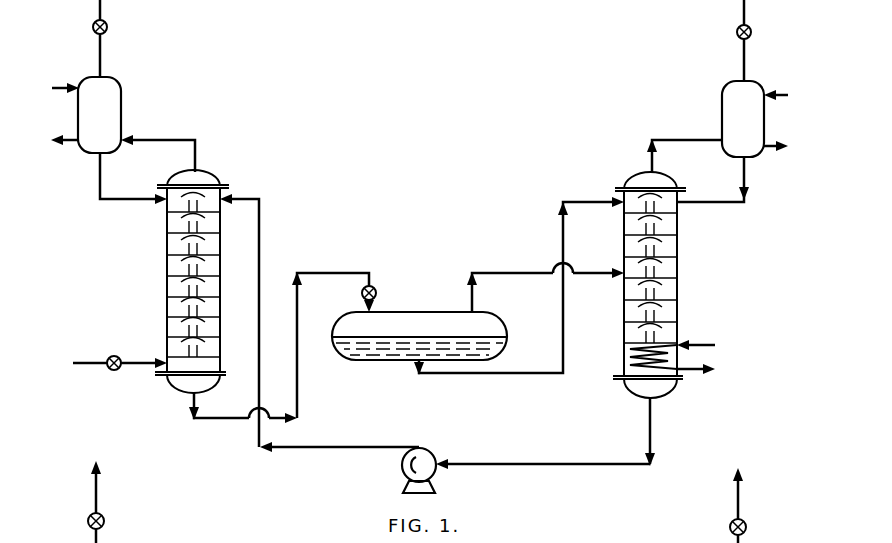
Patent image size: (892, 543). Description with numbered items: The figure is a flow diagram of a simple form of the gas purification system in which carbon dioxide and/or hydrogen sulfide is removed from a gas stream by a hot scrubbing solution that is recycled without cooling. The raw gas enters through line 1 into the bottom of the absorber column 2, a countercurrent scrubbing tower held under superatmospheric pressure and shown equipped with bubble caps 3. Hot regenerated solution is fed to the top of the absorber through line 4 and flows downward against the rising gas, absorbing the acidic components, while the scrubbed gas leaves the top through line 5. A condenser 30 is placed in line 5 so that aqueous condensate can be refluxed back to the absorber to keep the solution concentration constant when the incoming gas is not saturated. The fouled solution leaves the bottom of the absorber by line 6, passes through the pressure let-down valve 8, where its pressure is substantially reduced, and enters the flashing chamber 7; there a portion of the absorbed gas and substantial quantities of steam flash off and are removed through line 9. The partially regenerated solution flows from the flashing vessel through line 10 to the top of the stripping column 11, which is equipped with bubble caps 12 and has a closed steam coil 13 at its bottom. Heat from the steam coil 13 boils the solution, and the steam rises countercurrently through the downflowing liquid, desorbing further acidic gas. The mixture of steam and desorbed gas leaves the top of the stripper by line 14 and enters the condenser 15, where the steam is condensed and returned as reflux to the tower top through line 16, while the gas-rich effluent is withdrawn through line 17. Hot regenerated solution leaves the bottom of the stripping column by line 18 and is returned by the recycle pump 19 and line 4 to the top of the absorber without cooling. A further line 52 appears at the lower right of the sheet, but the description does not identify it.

The line 1 is at (140, 362).
The absorber column 2 is at (167, 296).
The bubble caps 3 is at (200, 241).
The line 4 is at (262, 225).
The line 5 is at (157, 135).
The line 6 is at (225, 420).
The flashing chamber 7 is at (360, 361).
The pressure let-down valve 8 is at (376, 289).
The line 9 is at (517, 272).
The line 10 is at (513, 377).
The stripping column 11 is at (678, 284).
The bubble caps 12 is at (660, 241).
The closed steam coil 13 is at (630, 360).
The line 14 is at (670, 138).
The condenser 15 is at (722, 115).
The line 16 is at (747, 172).
The line 17 is at (744, 56).
The line 18 is at (651, 427).
The recycle pump 19 is at (436, 453).
The condenser 30 is at (118, 80).
The outlet line 52 is at (752, 505).